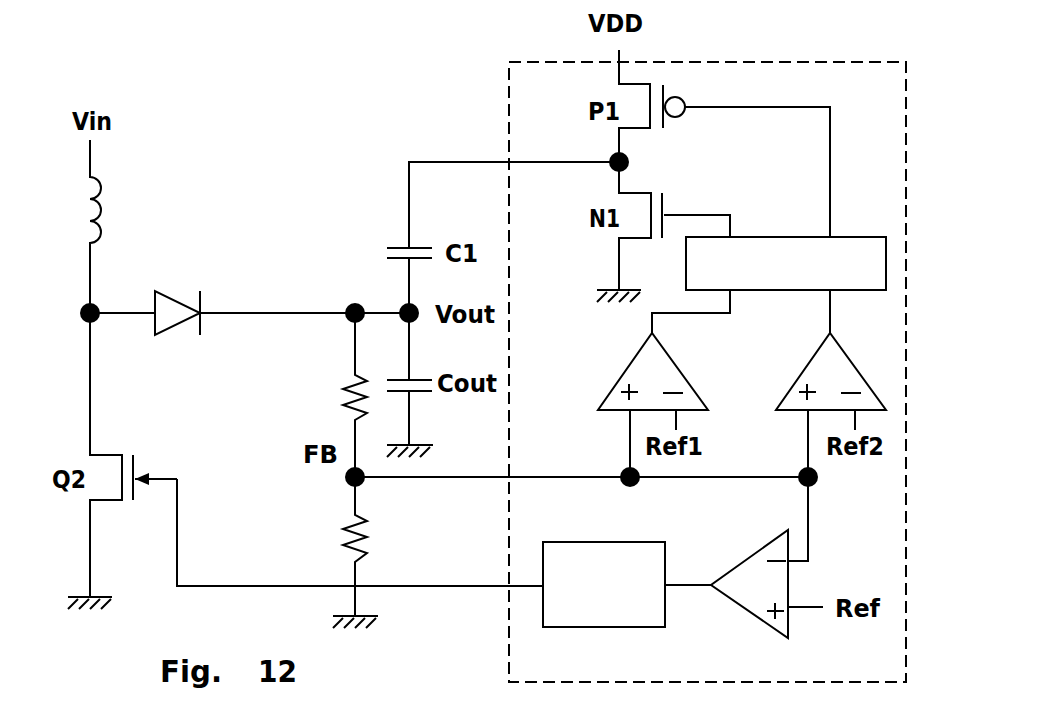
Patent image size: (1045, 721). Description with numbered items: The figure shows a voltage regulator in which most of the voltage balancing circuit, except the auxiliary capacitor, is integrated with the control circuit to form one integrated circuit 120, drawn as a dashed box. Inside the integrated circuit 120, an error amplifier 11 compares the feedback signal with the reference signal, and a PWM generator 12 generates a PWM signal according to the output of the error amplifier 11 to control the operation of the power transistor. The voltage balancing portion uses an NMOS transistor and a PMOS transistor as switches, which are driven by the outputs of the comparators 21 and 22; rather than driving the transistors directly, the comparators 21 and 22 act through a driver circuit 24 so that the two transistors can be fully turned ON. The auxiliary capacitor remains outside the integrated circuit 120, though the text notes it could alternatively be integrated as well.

The integrated circuit 120 is at (509, 131).
The comparator 21 is at (618, 378).
The comparator 22 is at (797, 378).
The driver circuit 24 is at (876, 277).
The error amplifier 11 is at (752, 555).
The PWM generator 12 is at (622, 627).